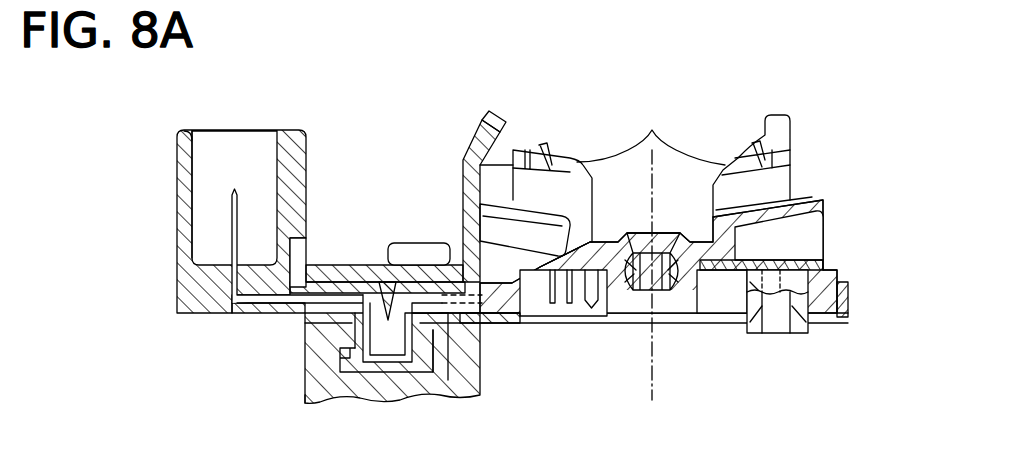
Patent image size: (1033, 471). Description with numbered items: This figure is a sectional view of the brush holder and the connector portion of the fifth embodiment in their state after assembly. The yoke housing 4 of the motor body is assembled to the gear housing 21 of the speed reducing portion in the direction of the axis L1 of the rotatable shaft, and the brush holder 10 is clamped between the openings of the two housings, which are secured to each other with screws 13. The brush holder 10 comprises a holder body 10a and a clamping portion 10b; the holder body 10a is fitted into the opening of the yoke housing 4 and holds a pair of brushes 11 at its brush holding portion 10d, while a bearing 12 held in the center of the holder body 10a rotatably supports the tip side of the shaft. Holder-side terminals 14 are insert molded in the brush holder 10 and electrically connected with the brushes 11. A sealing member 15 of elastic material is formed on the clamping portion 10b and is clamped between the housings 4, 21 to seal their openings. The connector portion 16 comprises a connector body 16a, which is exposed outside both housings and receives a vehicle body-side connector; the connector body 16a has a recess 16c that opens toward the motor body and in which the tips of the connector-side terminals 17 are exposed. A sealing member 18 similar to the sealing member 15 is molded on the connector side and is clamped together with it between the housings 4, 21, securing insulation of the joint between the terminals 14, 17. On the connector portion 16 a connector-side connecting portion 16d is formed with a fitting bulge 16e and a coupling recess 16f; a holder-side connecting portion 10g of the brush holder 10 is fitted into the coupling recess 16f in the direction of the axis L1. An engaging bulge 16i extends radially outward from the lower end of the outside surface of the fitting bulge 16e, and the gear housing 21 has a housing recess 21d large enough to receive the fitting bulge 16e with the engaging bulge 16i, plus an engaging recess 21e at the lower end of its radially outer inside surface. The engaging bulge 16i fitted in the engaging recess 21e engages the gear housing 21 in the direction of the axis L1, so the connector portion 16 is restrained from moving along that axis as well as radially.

The yoke housing 4 is at (463, 158).
The brush holder 10 is at (793, 112).
The holder body 10a is at (819, 206).
The clamping portion 10b is at (838, 286).
The brush holding portion 10d is at (635, 183).
The holder-side connecting portion 10g is at (482, 318).
The brushes 11 is at (530, 148).
The bearing 12 is at (632, 292).
The screws 13 is at (437, 245).
The holder-side terminals 14 is at (468, 345).
The sealing member 15 is at (418, 282).
The connector portion 16 is at (310, 128).
The connector body 16a is at (178, 240).
The recess 16c is at (188, 142).
The connector-side connecting portion 16d is at (455, 360).
The fitting bulge 16e is at (408, 398).
The coupling recess 16f is at (385, 325).
The engaging bulge 16i is at (318, 405).
The connector-side terminals 17 is at (233, 192).
The sealing member 18 is at (342, 282).
The gear housing 21 is at (305, 378).
The housing recess 21d is at (448, 400).
The engaging recess 21e is at (342, 352).
The axis L1 is at (667, 388).